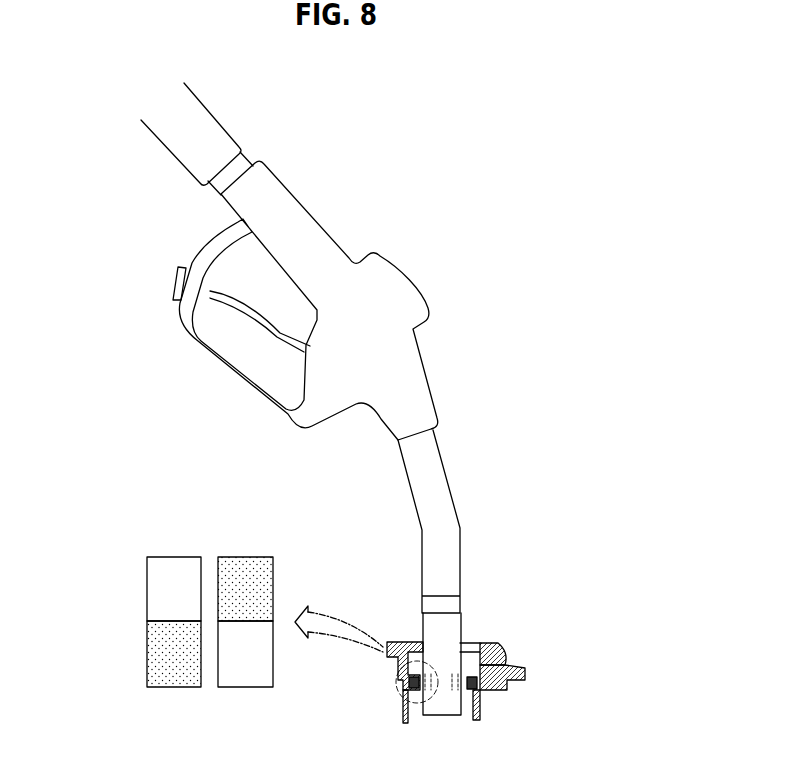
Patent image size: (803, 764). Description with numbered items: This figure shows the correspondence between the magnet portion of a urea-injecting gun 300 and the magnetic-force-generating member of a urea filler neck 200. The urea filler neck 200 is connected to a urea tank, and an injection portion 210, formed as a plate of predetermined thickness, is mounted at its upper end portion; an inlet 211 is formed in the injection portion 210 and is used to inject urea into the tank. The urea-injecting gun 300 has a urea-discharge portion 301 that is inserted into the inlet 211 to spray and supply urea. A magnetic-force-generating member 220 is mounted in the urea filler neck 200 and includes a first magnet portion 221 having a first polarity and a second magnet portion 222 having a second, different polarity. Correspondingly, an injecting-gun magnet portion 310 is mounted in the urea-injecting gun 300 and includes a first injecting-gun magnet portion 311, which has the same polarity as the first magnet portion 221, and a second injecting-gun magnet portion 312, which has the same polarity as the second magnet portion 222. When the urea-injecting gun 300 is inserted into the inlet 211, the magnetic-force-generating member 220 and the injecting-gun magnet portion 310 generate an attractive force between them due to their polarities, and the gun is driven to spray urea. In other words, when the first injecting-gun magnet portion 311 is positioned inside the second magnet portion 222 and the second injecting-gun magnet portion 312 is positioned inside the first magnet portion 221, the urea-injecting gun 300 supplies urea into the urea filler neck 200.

The urea-injecting gun 300 is at (447, 388).
The urea-discharge portion 301 is at (447, 658).
The injecting-gun magnet portion 310 is at (301, 588).
The first injecting-gun magnet portion 311 is at (273, 665).
The second injecting-gun magnet portion 312 is at (273, 583).
The magnetic-force-generating member 220 is at (128, 571).
The first magnet portion 221 is at (148, 586).
The second magnet portion 222 is at (148, 648).
The injection portion 210 is at (493, 642).
The inlet 211 is at (503, 662).
The urea filler neck 200 is at (480, 707).